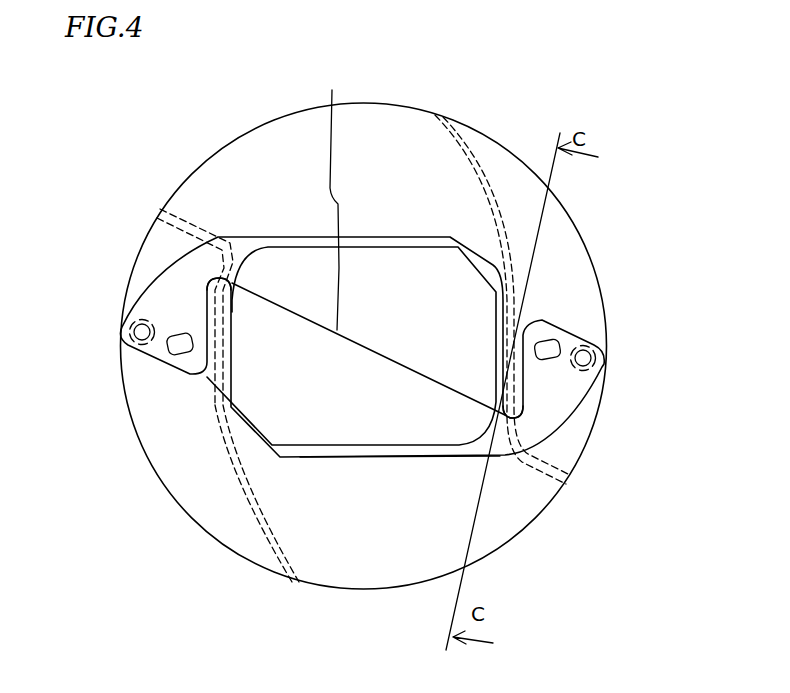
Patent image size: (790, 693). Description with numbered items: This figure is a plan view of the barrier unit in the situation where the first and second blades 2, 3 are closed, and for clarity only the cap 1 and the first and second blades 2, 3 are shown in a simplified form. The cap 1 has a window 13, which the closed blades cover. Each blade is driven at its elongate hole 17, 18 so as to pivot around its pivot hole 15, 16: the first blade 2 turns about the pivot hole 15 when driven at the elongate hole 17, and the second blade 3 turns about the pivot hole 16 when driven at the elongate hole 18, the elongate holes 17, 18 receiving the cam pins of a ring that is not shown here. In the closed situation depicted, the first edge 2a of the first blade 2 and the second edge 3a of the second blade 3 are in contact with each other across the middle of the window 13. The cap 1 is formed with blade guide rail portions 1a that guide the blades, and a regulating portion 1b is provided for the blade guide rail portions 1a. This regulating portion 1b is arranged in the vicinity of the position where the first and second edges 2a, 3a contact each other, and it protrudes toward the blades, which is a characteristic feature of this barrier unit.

The cap 1 is at (565, 243).
The blade guide rail portions 1a is at (460, 143).
The regulating portion 1b is at (223, 258).
The first blade 2 is at (307, 268).
The first edge 2a is at (332, 197).
The second blade 3 is at (359, 428).
The second edge 3a is at (308, 487).
The window 13 is at (402, 457).
The pivot hole 15 is at (128, 330).
The pivot hole 16 is at (596, 355).
The elongate hole 17 is at (174, 351).
The elongate hole 18 is at (500, 422).